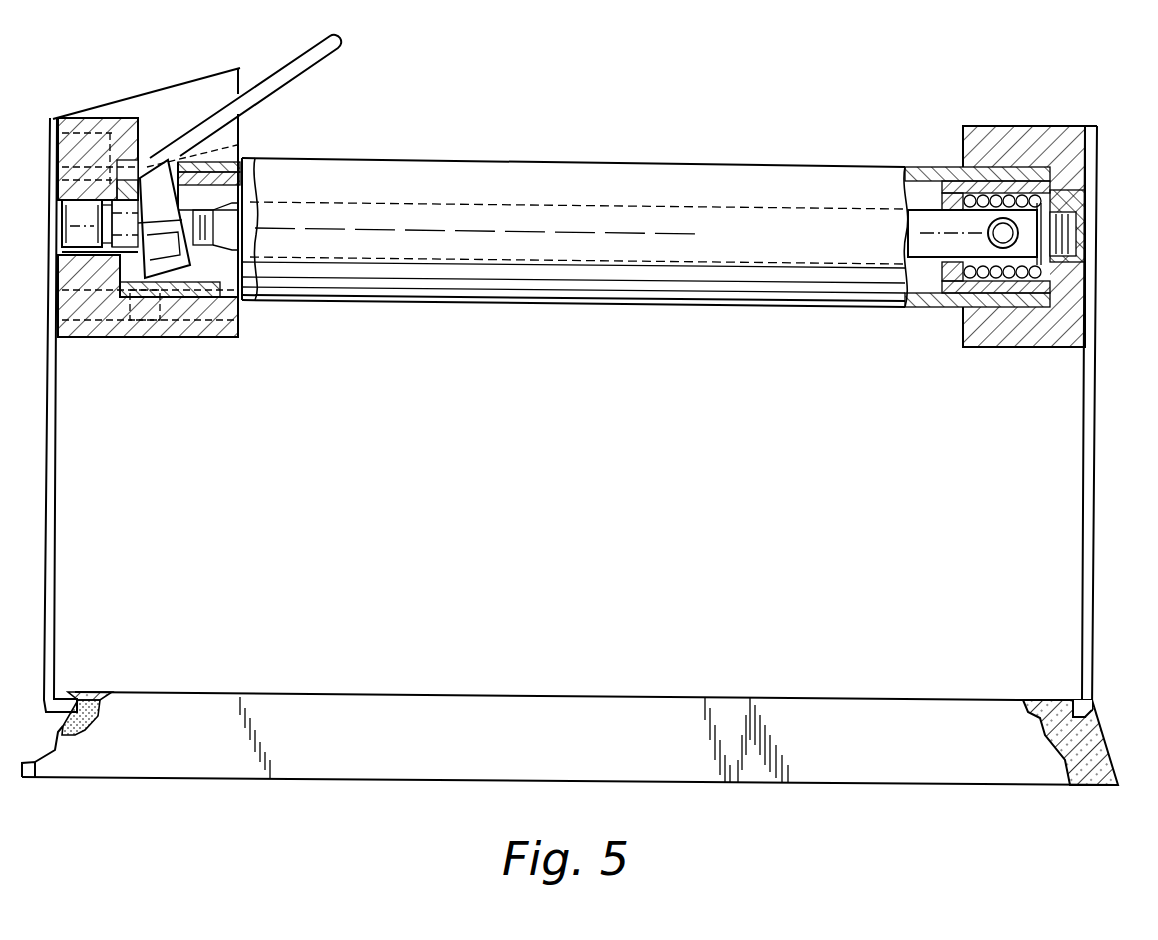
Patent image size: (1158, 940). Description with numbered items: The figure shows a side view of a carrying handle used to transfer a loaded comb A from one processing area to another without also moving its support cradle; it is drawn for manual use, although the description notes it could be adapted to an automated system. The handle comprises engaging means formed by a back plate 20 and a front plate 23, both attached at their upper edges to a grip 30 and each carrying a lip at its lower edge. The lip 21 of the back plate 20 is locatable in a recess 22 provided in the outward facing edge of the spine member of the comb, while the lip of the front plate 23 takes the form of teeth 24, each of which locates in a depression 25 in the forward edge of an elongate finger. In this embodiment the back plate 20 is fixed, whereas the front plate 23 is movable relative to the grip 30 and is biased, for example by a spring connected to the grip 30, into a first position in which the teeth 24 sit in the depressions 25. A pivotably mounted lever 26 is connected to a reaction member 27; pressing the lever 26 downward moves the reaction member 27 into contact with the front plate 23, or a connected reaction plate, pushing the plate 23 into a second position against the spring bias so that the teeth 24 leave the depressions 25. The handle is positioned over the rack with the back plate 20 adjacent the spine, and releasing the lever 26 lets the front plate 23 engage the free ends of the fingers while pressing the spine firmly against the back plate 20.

The back plate 20 is at (1094, 445).
The lip 21 is at (1098, 720).
The recess 22 is at (1041, 700).
The front plate 23 is at (57, 472).
The teeth 24 is at (62, 700).
The depression 25 is at (105, 692).
The lever 26 is at (277, 75).
The reaction member 27 is at (168, 266).
The grip 30 is at (569, 248).
The loaded comb A is at (540, 685).